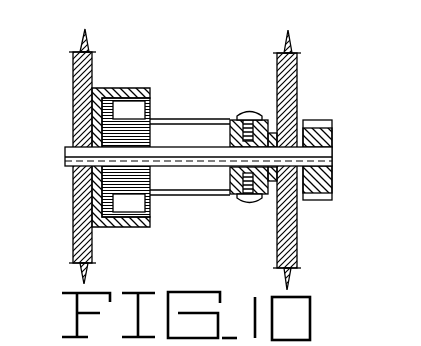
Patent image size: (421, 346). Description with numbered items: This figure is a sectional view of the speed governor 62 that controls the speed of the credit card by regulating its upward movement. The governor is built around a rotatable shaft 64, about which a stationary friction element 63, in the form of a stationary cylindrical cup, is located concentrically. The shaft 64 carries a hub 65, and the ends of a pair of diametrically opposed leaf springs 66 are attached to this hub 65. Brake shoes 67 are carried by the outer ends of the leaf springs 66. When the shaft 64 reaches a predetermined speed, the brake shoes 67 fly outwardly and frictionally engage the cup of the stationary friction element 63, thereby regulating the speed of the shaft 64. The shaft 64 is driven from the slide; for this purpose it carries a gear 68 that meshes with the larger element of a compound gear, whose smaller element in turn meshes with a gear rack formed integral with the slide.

The speed governor 62 is at (208, 88).
The stationary friction element 63 is at (102, 120).
The rotatable shaft 64 is at (68, 168).
The hub 65 is at (293, 110).
The leaf springs 66 is at (220, 197).
The brake shoes 67 is at (128, 102).
The gear 68 is at (328, 137).